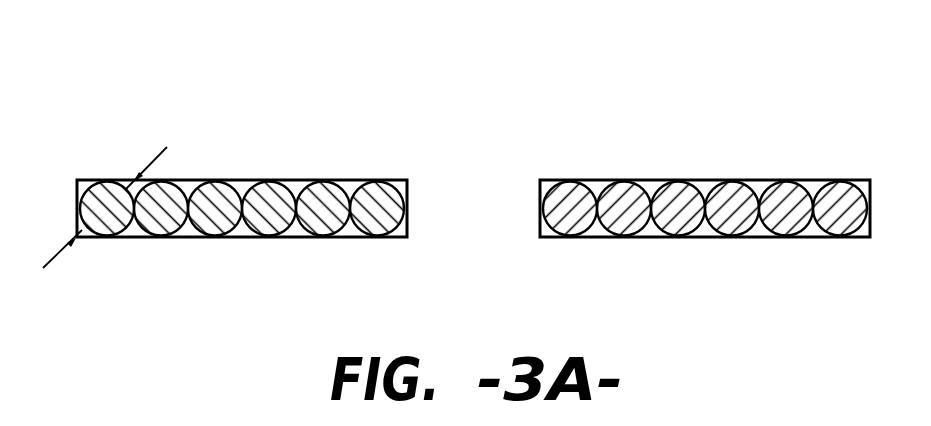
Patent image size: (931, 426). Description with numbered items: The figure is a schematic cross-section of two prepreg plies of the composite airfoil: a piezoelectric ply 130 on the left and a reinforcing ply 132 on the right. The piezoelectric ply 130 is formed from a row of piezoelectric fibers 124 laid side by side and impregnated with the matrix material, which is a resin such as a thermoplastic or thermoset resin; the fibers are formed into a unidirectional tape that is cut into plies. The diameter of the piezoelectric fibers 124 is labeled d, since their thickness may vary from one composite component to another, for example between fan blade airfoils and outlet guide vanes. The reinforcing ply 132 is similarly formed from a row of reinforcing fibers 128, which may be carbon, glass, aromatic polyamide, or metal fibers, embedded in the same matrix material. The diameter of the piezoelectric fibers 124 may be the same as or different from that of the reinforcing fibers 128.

The piezoelectric ply 130 is at (219, 158).
The reinforcing ply 132 is at (691, 161).
The piezoelectric fibers 124 is at (217, 205).
The reinforcing fibers 128 is at (682, 205).